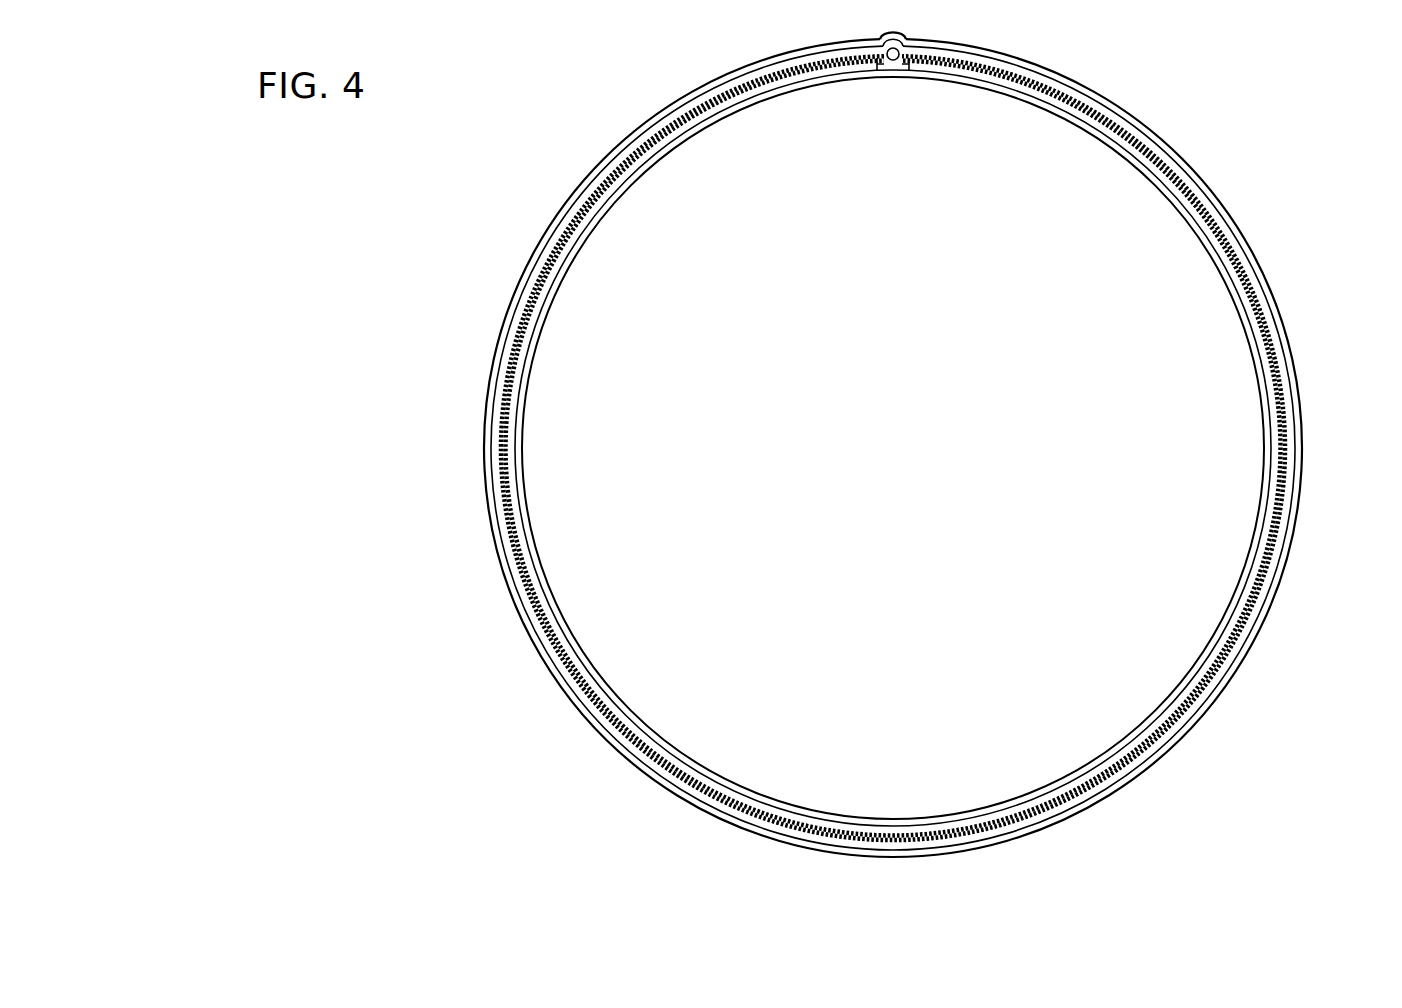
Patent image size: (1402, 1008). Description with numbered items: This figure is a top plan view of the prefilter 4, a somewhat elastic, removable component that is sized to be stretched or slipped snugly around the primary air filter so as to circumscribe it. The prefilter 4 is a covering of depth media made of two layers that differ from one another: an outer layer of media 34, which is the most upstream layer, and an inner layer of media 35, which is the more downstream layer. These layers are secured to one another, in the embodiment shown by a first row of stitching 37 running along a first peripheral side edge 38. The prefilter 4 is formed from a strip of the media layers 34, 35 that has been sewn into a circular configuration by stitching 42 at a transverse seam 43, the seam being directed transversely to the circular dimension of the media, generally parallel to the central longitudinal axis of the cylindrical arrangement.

The prefilter 4 is at (1232, 212).
The outer layer of media 34 is at (1262, 267).
The inner layer of media 35 is at (1227, 270).
The first row of stitching 37 is at (1095, 102).
The first peripheral side edge 38 is at (1152, 147).
The stitching 42 is at (882, 42).
The transverse seam 43 is at (900, 42).